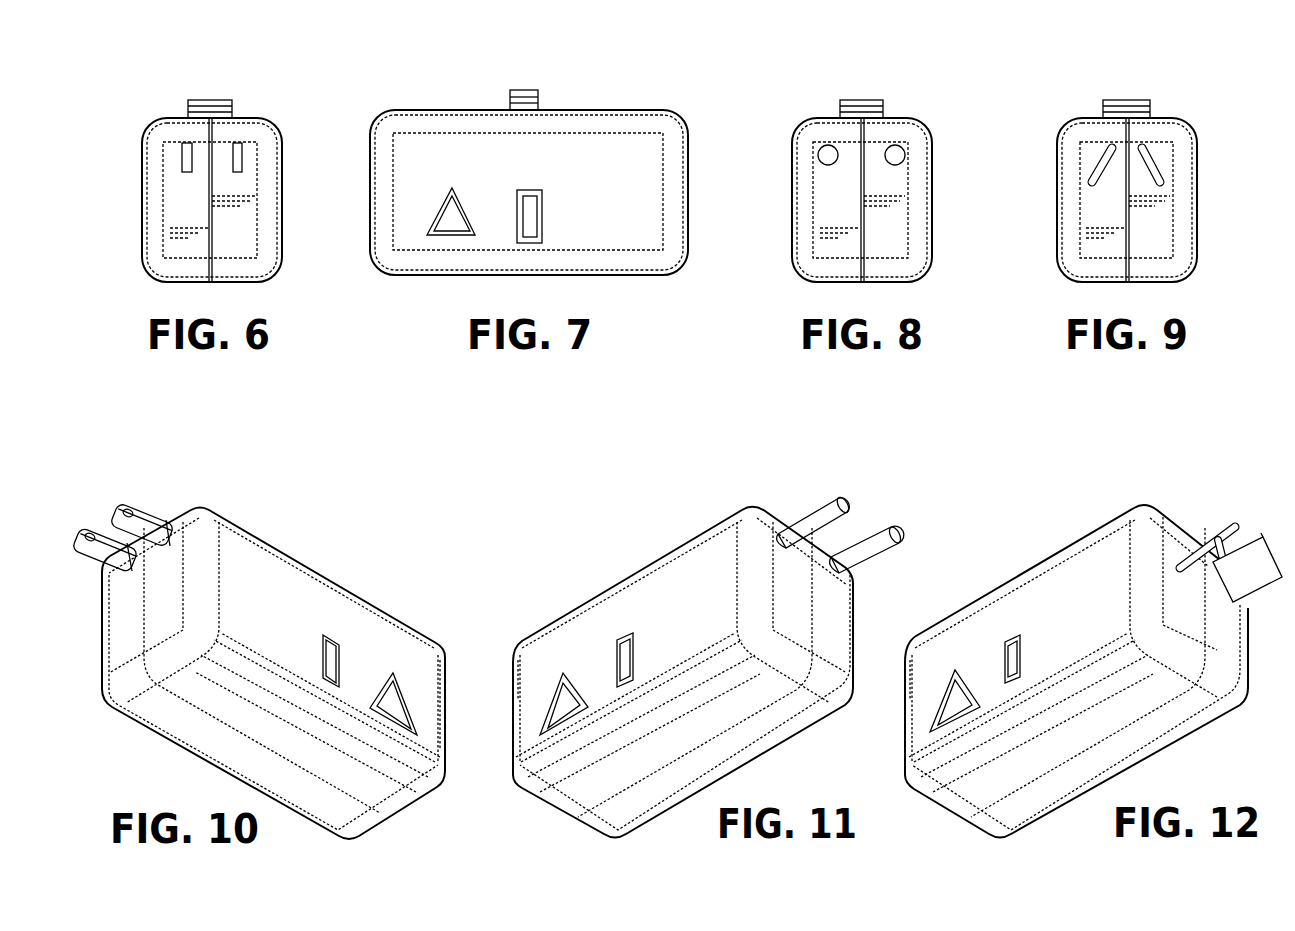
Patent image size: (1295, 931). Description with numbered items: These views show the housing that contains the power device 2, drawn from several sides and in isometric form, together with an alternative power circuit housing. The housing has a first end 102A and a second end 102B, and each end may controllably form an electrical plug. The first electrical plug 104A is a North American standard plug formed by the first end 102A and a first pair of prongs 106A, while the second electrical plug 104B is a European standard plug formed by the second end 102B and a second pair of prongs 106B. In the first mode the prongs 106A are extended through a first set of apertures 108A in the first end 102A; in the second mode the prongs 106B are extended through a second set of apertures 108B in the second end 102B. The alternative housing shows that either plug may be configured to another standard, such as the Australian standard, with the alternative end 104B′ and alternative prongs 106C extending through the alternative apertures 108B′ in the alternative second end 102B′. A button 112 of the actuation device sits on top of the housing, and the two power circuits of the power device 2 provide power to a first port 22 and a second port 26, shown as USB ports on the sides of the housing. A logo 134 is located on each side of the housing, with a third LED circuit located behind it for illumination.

In FIG. 6, the power device 2 is at (204, 165).
In FIG. 7, the power device 2 is at (532, 155).
In FIG. 8, the power device 2 is at (865, 159).
In FIG. 9, the power device 2 is at (1136, 159).
In FIG. 10, the power device 2 is at (271, 634).
In FIG. 11, the power device 2 is at (701, 634).
In FIG. 12, the power device 2 is at (1086, 653).
In FIG. 10, the first power connector or port 22 is at (323, 655).
In FIG. 7, the second power connector or port 26 is at (527, 210).
In FIG. 11, the second power connector or port 26 is at (628, 637).
In FIG. 12, the second power connector or port 26 is at (1013, 637).
In FIG. 6, the first end 102A is at (142, 192).
In FIG. 10, the first end 102A is at (102, 640).
In FIG. 11, the first end 102A is at (512, 663).
In FIG. 12, the first end 102A is at (905, 730).
In FIG. 8, the second end 102B is at (792, 145).
In FIG. 10, the second end 102B is at (447, 753).
In FIG. 11, the second end 102B is at (857, 637).
In FIG. 9, the second end (alternative) 102B′ is at (1057, 145).
In FIG. 12, the second end (alternative) 102B′ is at (1252, 657).
In FIG. 10, the first electrical plug 104A is at (112, 490).
In FIG. 11, the second electrical plug 104B is at (827, 488).
In FIG. 12, the alternative end (alternative second electrical plug) 104B′ is at (1203, 513).
In FIG. 10, the first pair of prongs 106A is at (178, 507).
In FIG. 11, the second pair of prongs 106B is at (800, 505).
In FIG. 12, the alternative prongs 106C is at (1268, 530).
In FIG. 6, the first set of apertures 108A is at (231, 184).
In FIG. 8, the second set of apertures 108B is at (887, 177).
In FIG. 9, the alternative second set of apertures 108B′ is at (1177, 177).
In FIG. 6, the button 112 is at (211, 100).
In FIG. 7, the button 112 is at (527, 90).
In FIG. 8, the button 112 is at (863, 100).
In FIG. 9, the button 112 is at (1140, 100).
In FIG. 7, the logo 134 is at (432, 230).
In FIG. 10, the logo 134 is at (402, 695).
In FIG. 11, the logo 134 is at (577, 676).
In FIG. 12, the logo 134 is at (963, 682).